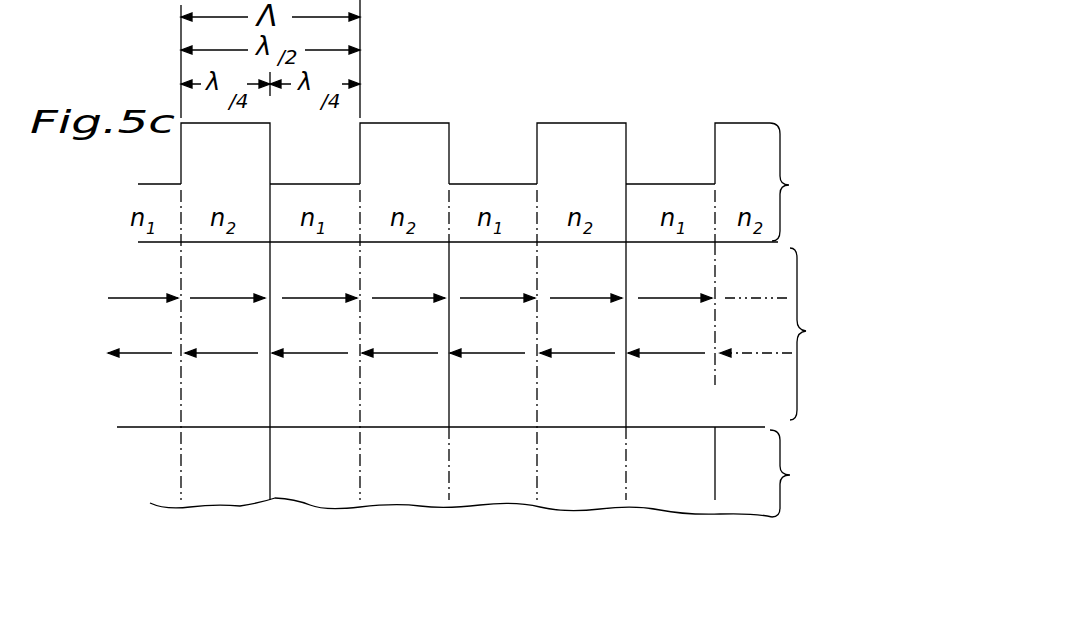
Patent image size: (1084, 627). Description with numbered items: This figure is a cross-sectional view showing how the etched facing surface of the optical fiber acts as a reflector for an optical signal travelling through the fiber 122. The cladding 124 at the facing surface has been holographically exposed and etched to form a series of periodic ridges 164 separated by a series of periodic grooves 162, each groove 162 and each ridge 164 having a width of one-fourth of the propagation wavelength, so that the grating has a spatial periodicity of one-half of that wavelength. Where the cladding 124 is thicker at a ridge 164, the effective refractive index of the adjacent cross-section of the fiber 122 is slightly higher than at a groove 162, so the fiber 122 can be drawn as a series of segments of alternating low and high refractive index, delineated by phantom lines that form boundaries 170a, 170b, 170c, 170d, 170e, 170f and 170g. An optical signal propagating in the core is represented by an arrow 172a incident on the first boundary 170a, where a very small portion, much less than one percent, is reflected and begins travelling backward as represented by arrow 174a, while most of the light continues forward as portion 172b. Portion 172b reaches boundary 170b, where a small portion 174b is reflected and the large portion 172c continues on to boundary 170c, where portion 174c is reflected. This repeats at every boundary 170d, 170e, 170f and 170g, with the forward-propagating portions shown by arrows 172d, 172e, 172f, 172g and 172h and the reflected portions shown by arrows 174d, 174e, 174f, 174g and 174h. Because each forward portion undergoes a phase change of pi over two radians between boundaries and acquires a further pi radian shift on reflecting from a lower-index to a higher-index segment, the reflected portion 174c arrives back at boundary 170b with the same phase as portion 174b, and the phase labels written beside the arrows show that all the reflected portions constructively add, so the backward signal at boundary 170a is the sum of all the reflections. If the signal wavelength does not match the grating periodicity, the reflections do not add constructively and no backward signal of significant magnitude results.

The fiber 122 is at (876, 367).
The cladding 124 is at (873, 515).
The periodic grooves 162 is at (340, 130).
The periodic ridges 164 is at (194, 152).
The boundary 170a is at (178, 390).
The boundary 170b is at (268, 411).
The boundary 170c is at (358, 408).
The boundary 170d is at (446, 408).
The boundary 170e is at (533, 400).
The boundary 170f is at (625, 400).
The boundary 170g is at (710, 404).
The arrow representing incident optical signal 172a is at (121, 296).
The forward propagating portion 172b is at (223, 296).
The forward propagating portion 172c is at (313, 296).
The forward propagating portion 172d is at (400, 296).
The forward propagating portion 172e is at (480, 296).
The forward propagating portion 172f is at (567, 296).
The forward propagating portion 172g is at (655, 296).
The forward propagating portion 172h is at (748, 296).
The reflected portion 174a is at (130, 353).
The reflected portion 174b is at (212, 357).
The reflected portion 174c is at (296, 357).
The reflected portion 174d is at (385, 357).
The reflected portion 174e is at (470, 357).
The reflected portion 174f is at (558, 357).
The reflected portion 174g is at (652, 357).
The reflected portion 174h is at (748, 358).